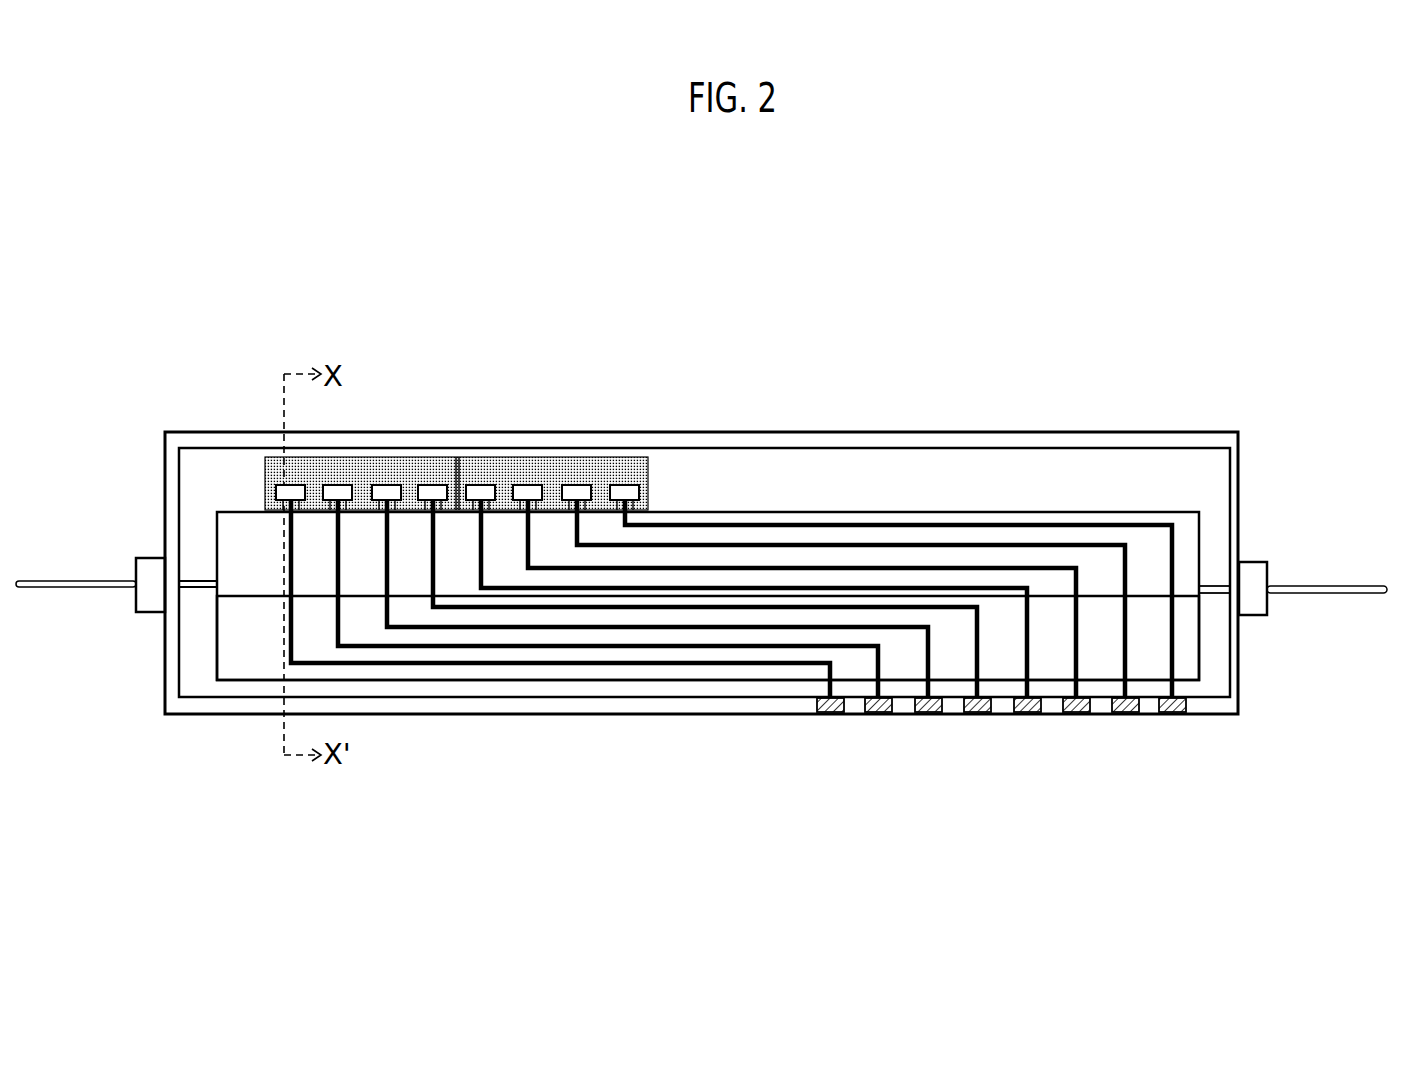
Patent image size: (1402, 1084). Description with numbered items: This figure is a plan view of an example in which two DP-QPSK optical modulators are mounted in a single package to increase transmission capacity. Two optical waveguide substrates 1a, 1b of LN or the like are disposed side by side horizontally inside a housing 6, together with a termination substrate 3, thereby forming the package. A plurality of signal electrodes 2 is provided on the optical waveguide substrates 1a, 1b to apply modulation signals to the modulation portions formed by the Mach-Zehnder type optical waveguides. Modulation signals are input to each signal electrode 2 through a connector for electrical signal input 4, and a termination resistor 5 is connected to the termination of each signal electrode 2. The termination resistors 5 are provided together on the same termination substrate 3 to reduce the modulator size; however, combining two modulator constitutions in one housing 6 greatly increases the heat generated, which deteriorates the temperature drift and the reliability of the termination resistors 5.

The optical waveguide substrate 1a is at (1182, 512).
The optical waveguide substrate 1b is at (1188, 666).
The signal electrode 2 is at (1050, 521).
The termination substrate 3 is at (398, 478).
The connector for electrical signal input 4 is at (1175, 703).
The termination resistor 5 is at (622, 483).
The housing 6 is at (448, 707).